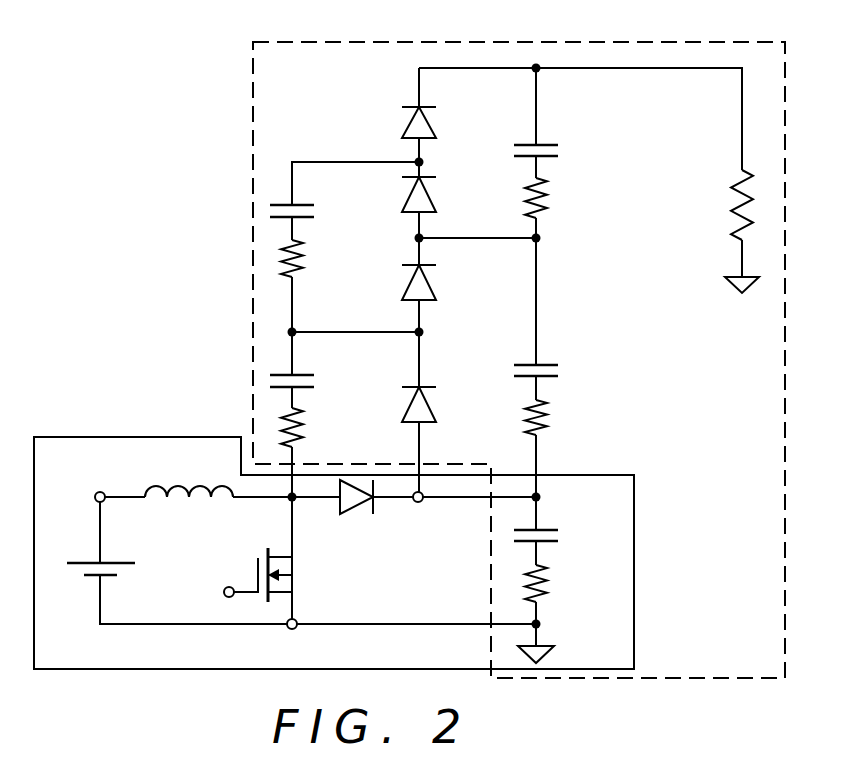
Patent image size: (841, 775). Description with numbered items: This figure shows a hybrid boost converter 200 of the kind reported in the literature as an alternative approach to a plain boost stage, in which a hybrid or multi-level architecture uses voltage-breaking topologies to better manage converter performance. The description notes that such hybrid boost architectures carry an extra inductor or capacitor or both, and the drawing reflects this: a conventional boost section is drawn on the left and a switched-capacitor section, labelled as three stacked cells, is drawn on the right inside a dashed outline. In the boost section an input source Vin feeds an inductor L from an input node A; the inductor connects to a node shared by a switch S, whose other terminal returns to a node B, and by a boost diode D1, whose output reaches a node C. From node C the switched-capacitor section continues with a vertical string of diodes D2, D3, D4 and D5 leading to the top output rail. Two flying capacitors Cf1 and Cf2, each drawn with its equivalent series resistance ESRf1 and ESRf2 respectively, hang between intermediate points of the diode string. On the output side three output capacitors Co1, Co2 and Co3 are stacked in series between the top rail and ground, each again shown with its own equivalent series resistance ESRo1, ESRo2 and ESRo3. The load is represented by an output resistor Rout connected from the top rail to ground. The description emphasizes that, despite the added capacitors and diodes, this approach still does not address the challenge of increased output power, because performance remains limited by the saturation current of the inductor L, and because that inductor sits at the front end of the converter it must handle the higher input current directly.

The hybrid boost converter 200 is at (172, 68).
The boost diode D1 is at (356, 513).
The switched capacitor cell diode D2 is at (435, 404).
The switched capacitor cell diode D3 is at (435, 282).
The switched capacitor cell diode D4 is at (436, 194).
The switched capacitor cell diode D5 is at (436, 122).
The flying capacitor Cf1 is at (305, 369).
The flying capacitor Cf2 is at (306, 200).
The equivalent series resistance of flying capacitor Cf1 ESRf1 is at (327, 427).
The equivalent series resistance of flying capacitor Cf2 ESRf2 is at (327, 258).
The output capacitor Co1 is at (553, 523).
The output capacitor Co2 is at (552, 359).
The output capacitor Co3 is at (552, 139).
The equivalent series resistance of output capacitor Co1 ESRo1 is at (574, 583).
The equivalent series resistance of output capacitor Co2 ESRo2 is at (573, 417).
The equivalent series resistance of output capacitor Co3 ESRo3 is at (573, 198).
The output load resistor Rout is at (707, 205).
The boost inductor L is at (189, 508).
The input voltage source Vin is at (91, 551).
The switch (MOSFET) S is at (258, 575).
The node A is at (88, 500).
The node B is at (291, 639).
The node C is at (420, 512).